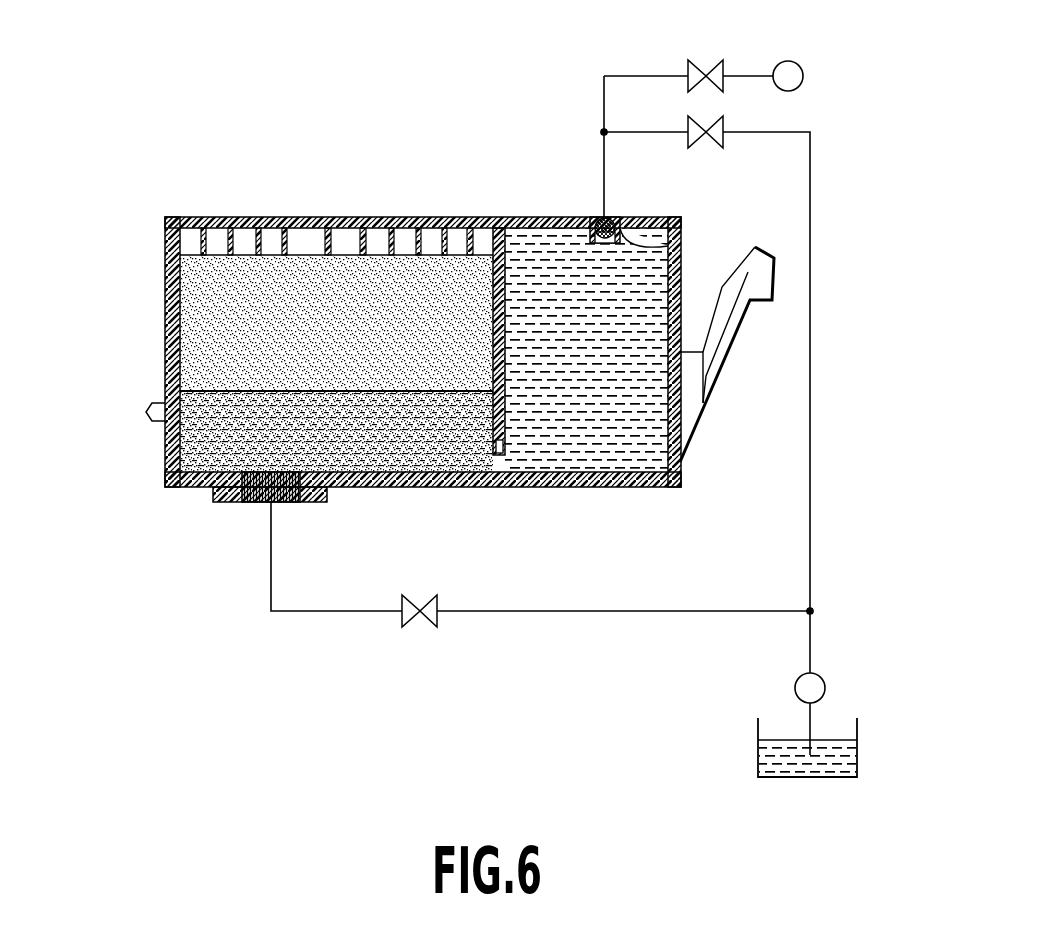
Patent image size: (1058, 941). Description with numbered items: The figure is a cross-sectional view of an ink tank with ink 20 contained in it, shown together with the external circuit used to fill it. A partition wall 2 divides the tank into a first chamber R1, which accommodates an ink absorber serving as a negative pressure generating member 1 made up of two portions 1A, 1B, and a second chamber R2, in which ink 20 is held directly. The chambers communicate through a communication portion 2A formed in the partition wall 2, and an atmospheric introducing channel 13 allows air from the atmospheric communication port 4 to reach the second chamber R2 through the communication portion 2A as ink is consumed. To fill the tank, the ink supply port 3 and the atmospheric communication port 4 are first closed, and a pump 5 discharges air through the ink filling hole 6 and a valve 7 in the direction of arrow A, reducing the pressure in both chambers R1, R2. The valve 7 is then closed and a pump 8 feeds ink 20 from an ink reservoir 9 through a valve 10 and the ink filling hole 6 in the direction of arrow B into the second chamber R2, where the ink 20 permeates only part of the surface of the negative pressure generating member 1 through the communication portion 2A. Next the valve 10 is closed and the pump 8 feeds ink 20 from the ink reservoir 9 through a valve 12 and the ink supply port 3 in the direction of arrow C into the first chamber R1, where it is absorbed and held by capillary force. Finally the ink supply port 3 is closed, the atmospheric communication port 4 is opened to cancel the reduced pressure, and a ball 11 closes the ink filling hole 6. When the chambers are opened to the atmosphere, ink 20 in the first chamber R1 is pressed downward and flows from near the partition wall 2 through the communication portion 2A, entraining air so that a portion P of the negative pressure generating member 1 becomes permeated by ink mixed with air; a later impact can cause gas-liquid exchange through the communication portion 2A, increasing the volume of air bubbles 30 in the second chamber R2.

The negative pressure generating member 1 is at (100, 272).
The negative pressure generating member portion 1A is at (182, 403).
The negative pressure generating member portion 1B is at (242, 317).
The partition wall 2 is at (506, 313).
The communication portion 2A is at (506, 456).
The ink supply port 3 is at (266, 498).
The atmospheric communication port 4 is at (302, 217).
The pump 5 is at (784, 61).
The ink filling hole 6 is at (598, 217).
The valve 7 is at (688, 62).
The pump 8 is at (795, 688).
The ink reservoir 9 is at (758, 760).
The valve 10 is at (718, 147).
The ball 11 is at (613, 217).
The valve 12 is at (406, 628).
The atmospheric introducing channel 13 is at (506, 418).
The ink 20 is at (197, 476).
The air bubbles 30 is at (662, 236).
The first chamber R1 is at (398, 455).
The second chamber R2 is at (647, 447).
The portion permeated by ink mixed with air P is at (478, 450).
The arrow A is at (624, 60).
The arrow B is at (647, 142).
The arrow C is at (276, 572).